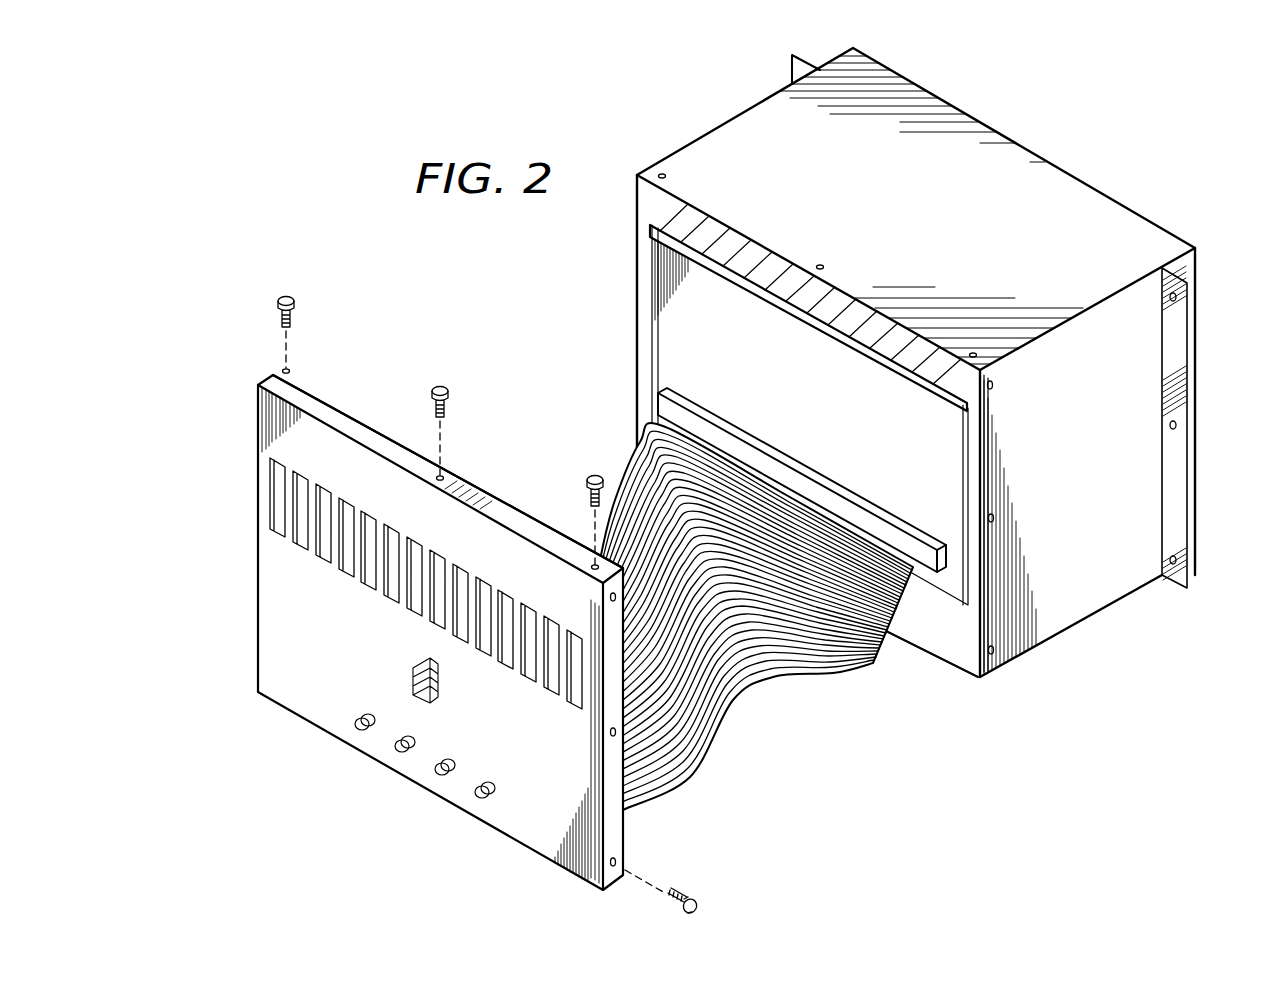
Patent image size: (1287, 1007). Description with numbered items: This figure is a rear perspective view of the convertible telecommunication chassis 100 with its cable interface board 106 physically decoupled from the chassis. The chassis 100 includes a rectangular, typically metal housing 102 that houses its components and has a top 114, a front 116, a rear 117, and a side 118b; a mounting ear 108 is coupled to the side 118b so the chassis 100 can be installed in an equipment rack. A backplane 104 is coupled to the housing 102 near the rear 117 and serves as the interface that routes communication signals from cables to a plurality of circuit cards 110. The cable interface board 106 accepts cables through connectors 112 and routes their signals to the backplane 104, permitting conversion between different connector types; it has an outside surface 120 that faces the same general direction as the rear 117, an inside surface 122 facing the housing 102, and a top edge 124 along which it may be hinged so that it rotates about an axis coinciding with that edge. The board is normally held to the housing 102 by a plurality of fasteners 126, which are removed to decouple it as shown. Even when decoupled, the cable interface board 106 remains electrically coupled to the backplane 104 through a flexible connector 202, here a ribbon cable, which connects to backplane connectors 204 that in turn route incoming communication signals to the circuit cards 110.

The chassis 100 is at (1033, 115).
The housing 102 is at (857, 49).
The backplane 104 is at (833, 394).
The cable interface board 106 is at (268, 380).
The mounting ears 108 is at (1181, 491).
The circuit cards 110 is at (748, 252).
The connectors 112 is at (338, 560).
The top 114 is at (938, 223).
The front 116 is at (1141, 214).
The rear 117 is at (970, 652).
The side 118b is at (1100, 494).
The outside surface 120 is at (320, 679).
The inside surface 122 is at (367, 405).
The top edge 124 is at (513, 520).
The fasteners 126 is at (285, 296).
The flexible connector 202 is at (862, 652).
The backplane connectors 204 is at (893, 533).